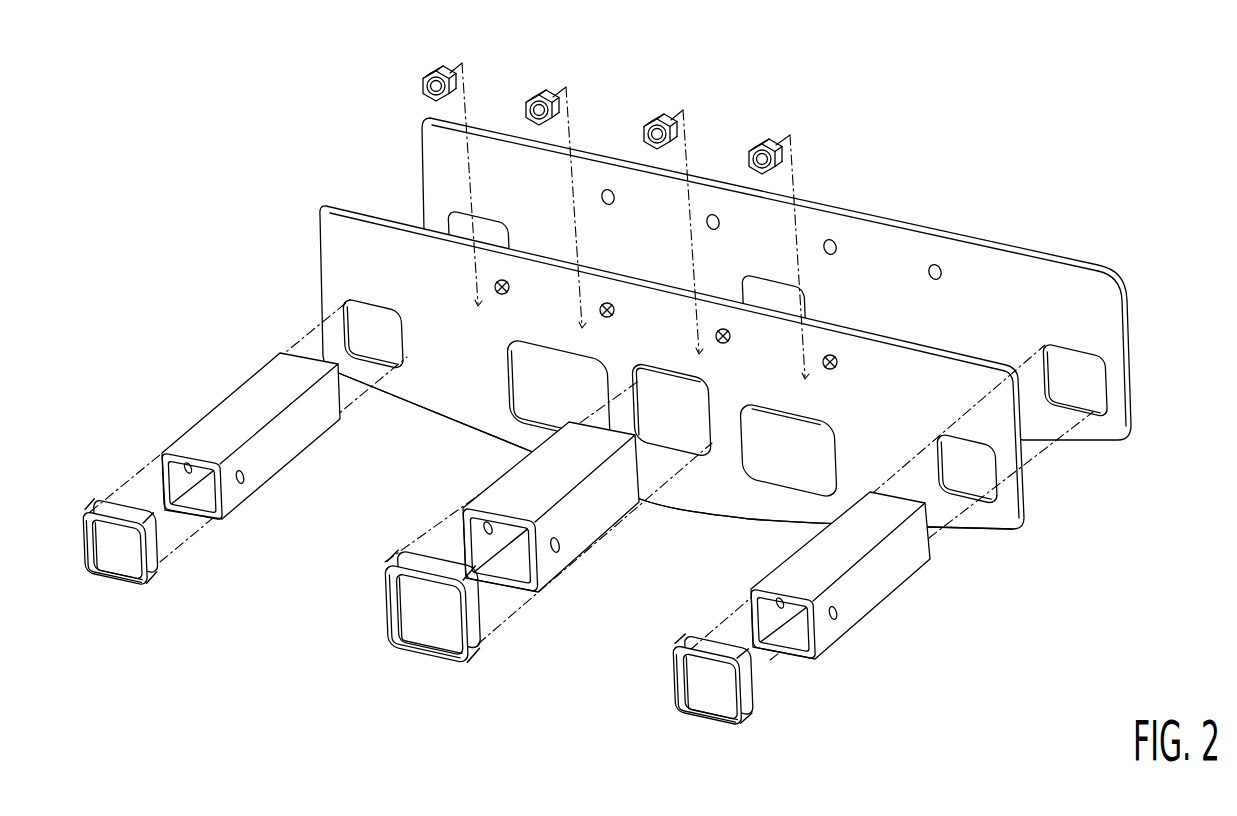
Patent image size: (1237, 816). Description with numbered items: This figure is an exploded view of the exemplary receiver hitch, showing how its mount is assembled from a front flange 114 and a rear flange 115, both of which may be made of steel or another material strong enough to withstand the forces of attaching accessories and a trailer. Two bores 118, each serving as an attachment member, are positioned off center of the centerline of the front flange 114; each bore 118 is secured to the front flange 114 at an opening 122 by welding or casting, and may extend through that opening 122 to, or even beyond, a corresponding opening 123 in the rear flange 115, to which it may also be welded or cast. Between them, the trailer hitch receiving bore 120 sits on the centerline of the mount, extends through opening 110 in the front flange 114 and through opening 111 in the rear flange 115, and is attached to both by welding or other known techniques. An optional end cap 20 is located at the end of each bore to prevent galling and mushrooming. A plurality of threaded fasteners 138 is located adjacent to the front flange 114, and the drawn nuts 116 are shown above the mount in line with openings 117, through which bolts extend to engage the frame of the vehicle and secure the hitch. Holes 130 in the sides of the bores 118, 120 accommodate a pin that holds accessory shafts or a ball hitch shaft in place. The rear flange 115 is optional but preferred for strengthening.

The end cap 20 is at (158, 578).
The opening 110 is at (717, 440).
The opening 111 is at (815, 307).
The front flange 114 is at (1027, 508).
The rear flange 115 is at (1088, 262).
The nut 116 is at (422, 85).
The opening 117 is at (509, 290).
The bore 118 is at (233, 517).
The trailer hitch receiving bore 120 is at (553, 585).
The opening 122 is at (370, 296).
The opening 123 is at (458, 214).
The holes 130 is at (185, 470).
The threaded fasteners 138 is at (608, 190).